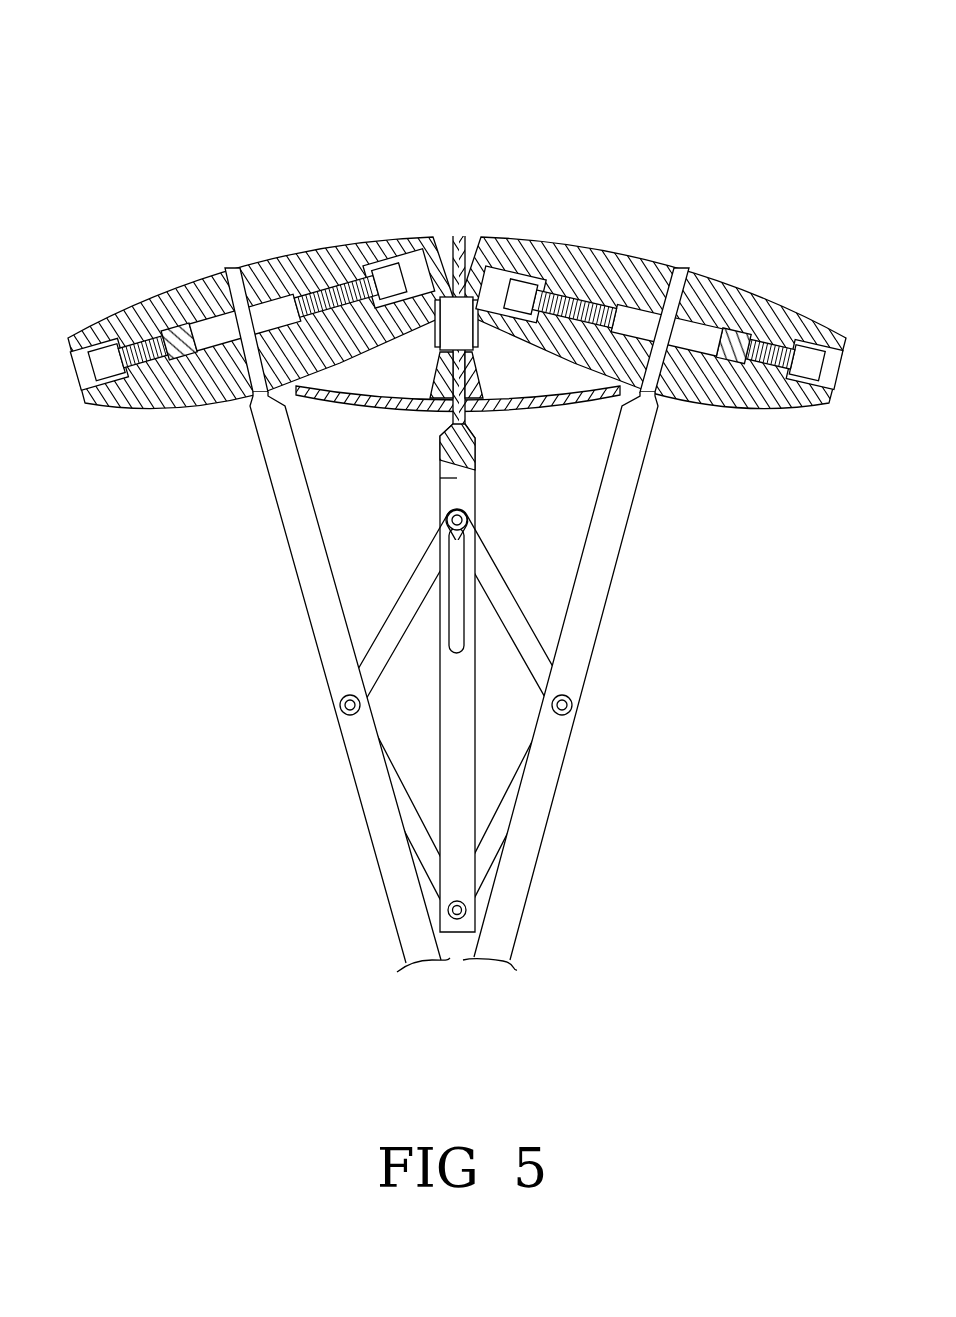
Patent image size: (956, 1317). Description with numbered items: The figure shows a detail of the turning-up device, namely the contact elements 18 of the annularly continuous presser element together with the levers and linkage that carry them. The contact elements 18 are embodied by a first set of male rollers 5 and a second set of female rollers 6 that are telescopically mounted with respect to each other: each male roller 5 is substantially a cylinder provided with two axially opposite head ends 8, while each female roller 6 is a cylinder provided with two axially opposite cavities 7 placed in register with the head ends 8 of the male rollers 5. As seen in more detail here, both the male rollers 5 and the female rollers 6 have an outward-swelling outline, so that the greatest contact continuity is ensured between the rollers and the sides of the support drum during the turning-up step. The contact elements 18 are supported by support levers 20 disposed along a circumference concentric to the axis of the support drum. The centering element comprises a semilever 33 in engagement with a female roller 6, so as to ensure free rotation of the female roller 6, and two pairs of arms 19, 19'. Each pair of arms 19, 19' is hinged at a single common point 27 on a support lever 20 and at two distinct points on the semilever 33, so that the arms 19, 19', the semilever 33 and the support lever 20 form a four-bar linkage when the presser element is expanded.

The male roller 5 is at (133, 303).
The female roller 6 is at (382, 240).
The cavity 7 is at (340, 387).
The head end 8 is at (491, 257).
The contact element 18 is at (190, 262).
The arm 19 is at (292, 715).
The arm 19' is at (607, 714).
The support lever 20 is at (307, 563).
The common point 27 is at (351, 707).
The semilever 33 is at (455, 479).